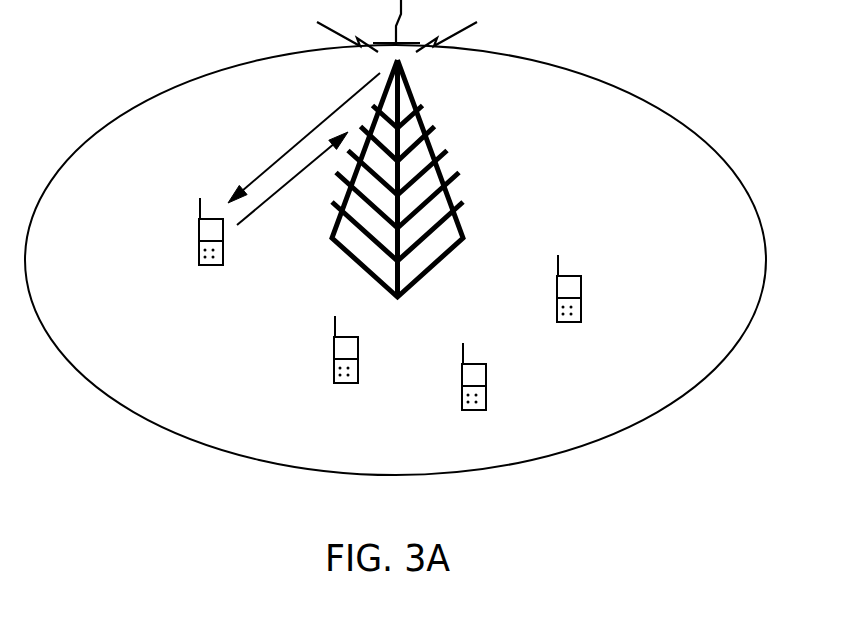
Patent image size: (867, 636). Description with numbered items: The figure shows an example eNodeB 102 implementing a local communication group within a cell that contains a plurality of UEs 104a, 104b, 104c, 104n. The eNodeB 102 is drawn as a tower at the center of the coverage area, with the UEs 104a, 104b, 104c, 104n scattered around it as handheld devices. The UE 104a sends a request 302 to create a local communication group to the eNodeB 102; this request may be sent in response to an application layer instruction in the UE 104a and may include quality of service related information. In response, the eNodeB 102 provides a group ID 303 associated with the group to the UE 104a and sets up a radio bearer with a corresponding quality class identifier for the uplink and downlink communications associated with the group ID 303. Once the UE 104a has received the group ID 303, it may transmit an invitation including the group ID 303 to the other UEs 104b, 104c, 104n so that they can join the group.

The eNodeB 102 is at (428, 147).
The UE 104a is at (199, 249).
The UE 104b is at (334, 365).
The UE 104c is at (462, 394).
The UE 104n is at (557, 306).
The request 302 is at (305, 170).
The group ID 303 is at (300, 142).